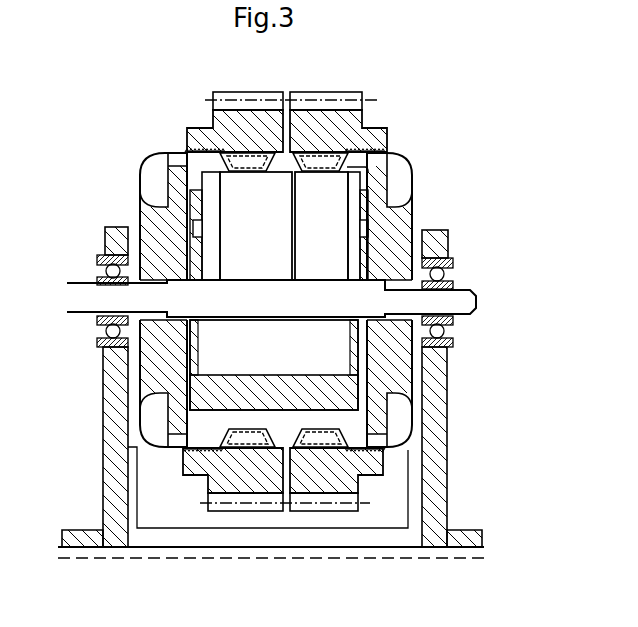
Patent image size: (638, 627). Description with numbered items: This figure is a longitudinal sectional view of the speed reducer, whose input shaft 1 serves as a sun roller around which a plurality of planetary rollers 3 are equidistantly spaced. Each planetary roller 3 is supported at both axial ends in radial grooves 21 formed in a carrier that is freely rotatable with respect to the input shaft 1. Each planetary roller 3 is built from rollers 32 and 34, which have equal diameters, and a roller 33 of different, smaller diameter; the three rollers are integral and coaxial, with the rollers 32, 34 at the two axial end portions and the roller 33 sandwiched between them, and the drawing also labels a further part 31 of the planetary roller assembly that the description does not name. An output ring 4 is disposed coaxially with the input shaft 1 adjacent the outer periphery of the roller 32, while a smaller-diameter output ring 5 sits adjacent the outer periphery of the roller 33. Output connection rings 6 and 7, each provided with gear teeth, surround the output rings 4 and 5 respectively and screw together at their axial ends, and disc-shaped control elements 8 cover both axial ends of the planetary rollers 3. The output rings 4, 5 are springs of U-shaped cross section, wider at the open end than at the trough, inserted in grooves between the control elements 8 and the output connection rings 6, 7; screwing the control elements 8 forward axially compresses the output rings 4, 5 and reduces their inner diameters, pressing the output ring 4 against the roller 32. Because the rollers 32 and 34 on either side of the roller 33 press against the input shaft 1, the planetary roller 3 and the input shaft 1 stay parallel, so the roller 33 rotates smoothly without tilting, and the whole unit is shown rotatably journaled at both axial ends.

The input shaft 1 is at (452, 303).
The planetary roller 3 is at (190, 200).
The output ring 4 is at (362, 106).
The output ring 5 is at (252, 168).
The output connection ring 6 is at (337, 112).
The output connection ring 7 is at (234, 112).
The control element 8 is at (155, 237).
The radial groove 21 is at (197, 205).
The key 31 is at (195, 222).
The roller 32 is at (308, 197).
The roller 33 is at (278, 195).
The roller 34 is at (210, 182).